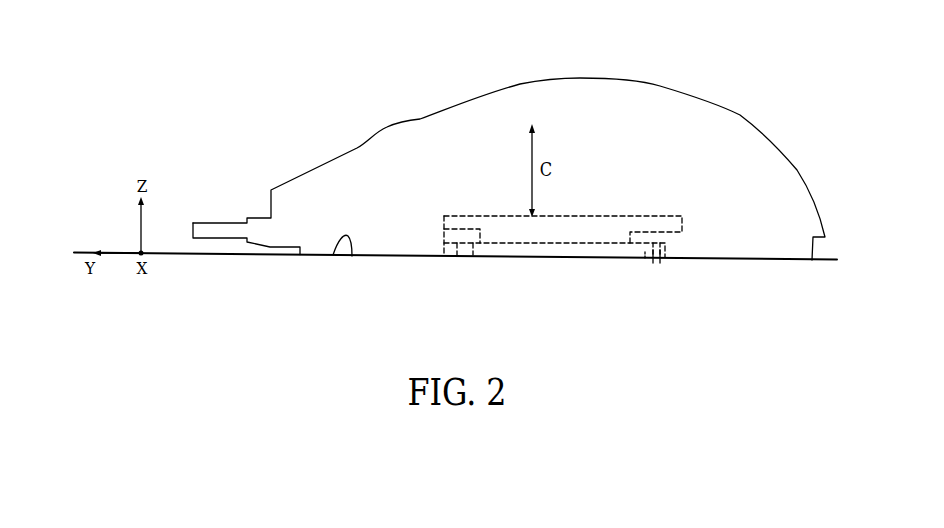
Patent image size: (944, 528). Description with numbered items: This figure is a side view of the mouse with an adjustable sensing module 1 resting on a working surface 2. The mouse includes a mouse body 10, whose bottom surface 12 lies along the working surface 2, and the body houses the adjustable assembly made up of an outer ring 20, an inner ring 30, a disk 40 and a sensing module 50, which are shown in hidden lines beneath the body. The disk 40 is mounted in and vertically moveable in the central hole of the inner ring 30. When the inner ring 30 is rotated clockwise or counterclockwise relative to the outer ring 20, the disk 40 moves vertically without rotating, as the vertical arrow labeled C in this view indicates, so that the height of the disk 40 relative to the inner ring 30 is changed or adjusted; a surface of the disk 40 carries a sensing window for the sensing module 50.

The mouse with an adjustable sensing module 1 is at (630, 75).
The working surface 2 is at (170, 246).
The mouse body 10 is at (667, 108).
The bottom surface 12 is at (352, 256).
The outer ring 20 is at (660, 258).
The inner ring 30 is at (641, 258).
The disk 40 is at (548, 250).
The sensing module 50 is at (505, 232).